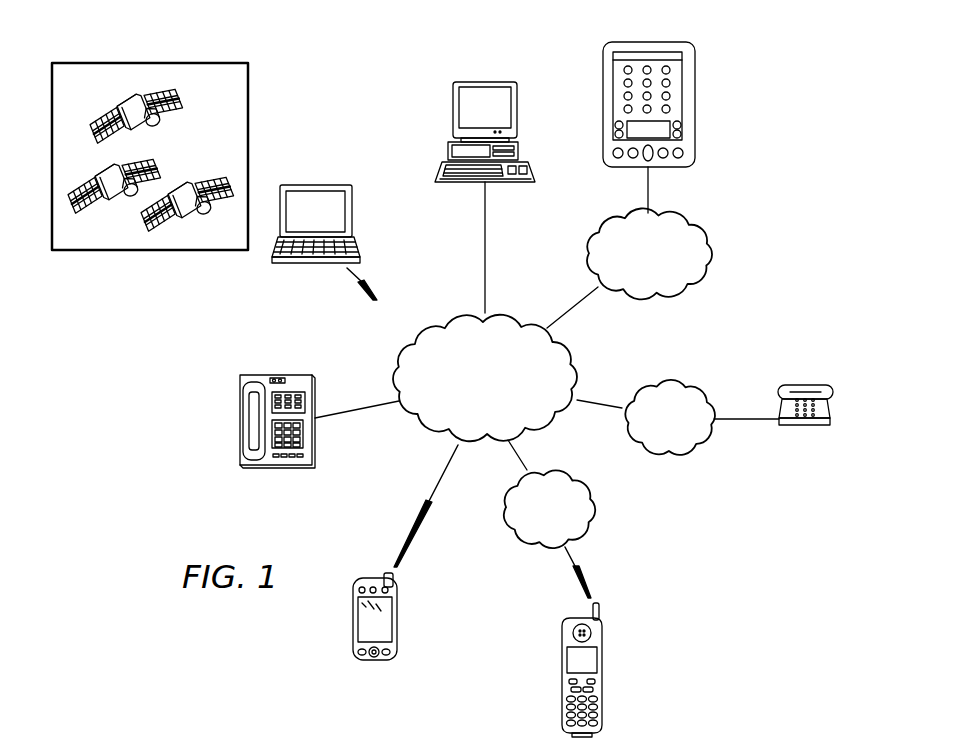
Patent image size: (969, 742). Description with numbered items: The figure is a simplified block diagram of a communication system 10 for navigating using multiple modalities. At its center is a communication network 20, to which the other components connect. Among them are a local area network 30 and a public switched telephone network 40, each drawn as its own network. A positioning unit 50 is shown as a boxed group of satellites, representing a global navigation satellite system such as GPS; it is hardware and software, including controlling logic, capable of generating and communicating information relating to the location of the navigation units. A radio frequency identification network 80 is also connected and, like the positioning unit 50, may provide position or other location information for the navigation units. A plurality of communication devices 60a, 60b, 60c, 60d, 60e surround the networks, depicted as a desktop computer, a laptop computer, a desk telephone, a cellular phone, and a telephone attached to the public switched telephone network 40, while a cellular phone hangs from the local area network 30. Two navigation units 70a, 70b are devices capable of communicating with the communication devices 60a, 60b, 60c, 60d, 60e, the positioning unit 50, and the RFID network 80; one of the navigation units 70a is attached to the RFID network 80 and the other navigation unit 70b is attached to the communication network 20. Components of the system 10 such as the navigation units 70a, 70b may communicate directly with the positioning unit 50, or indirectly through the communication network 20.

The communication system 10 is at (176, 435).
The communication network 20 is at (498, 407).
The local area network (LAN) 30 is at (596, 507).
The public switched telephone network (PSTN) 40 is at (682, 379).
The positioning unit 50 is at (224, 144).
The communication device 60a is at (453, 110).
The communication device 60b is at (313, 185).
The communication device 60c is at (275, 375).
The communication device 60d is at (602, 688).
The communication device 60e is at (805, 385).
The navigation unit 70a is at (695, 99).
The navigation unit 70b is at (372, 663).
The radio frequency identification (RFID) network 80 is at (701, 219).